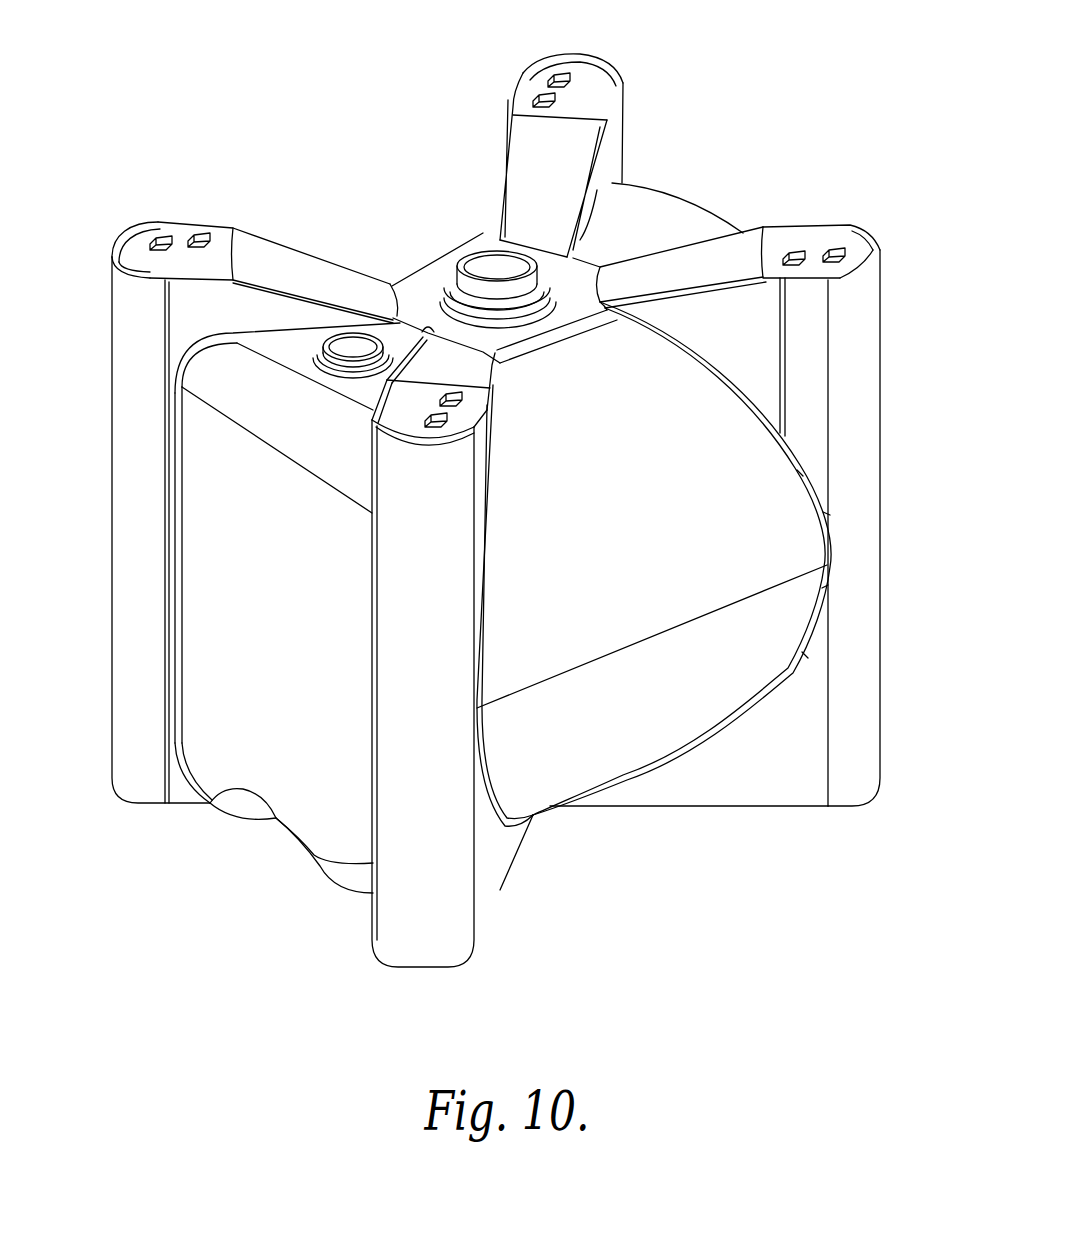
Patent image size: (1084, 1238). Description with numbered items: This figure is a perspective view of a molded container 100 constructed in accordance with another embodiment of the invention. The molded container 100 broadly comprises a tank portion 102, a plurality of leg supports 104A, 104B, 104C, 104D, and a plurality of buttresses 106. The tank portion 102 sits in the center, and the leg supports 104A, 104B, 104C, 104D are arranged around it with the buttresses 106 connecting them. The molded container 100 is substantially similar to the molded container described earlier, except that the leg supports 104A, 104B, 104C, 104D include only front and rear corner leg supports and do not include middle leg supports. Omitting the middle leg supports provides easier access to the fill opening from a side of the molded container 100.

The molded container 100 is at (350, 97).
The tank portion 102 is at (438, 243).
The leg support 104A is at (102, 419).
The leg support 104B is at (360, 613).
The leg support 104C is at (645, 96).
The leg support 104D is at (895, 262).
The buttress 106 is at (263, 253).